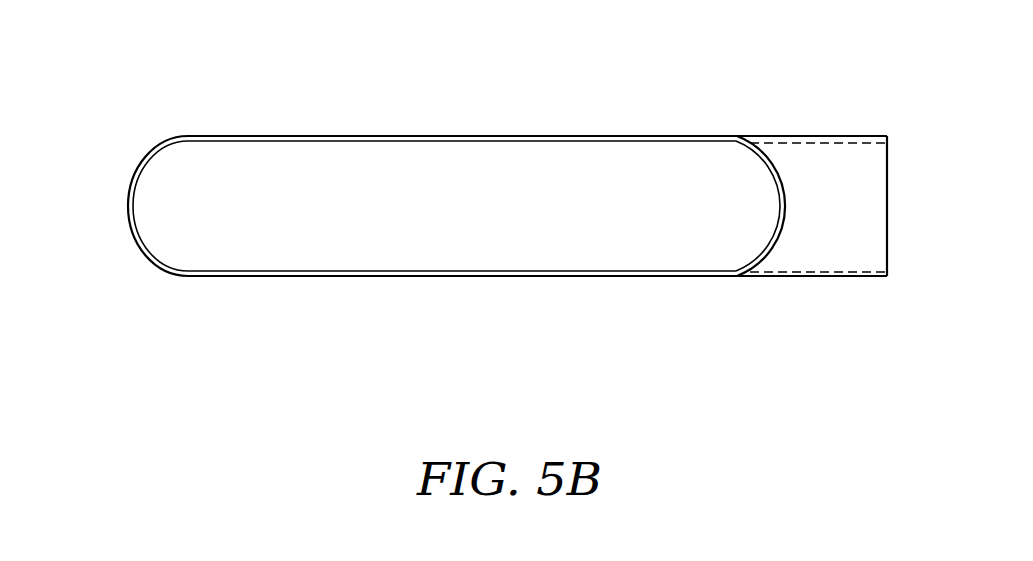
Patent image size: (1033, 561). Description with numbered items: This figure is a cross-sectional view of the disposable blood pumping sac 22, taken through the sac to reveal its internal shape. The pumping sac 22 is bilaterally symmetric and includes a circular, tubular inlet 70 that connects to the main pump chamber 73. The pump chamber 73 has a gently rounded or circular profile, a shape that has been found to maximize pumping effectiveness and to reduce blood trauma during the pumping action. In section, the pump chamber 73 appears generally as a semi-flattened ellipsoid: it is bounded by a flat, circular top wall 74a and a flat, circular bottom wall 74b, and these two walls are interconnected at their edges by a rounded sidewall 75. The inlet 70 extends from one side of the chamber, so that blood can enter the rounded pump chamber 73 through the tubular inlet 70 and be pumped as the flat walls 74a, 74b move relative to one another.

The pumping sac 22 is at (624, 313).
The inlet 70 is at (887, 228).
The main pump chamber 73 is at (257, 166).
The top wall 74a is at (425, 136).
The bottom wall 74b is at (259, 277).
The rounded sidewall 75 is at (130, 205).